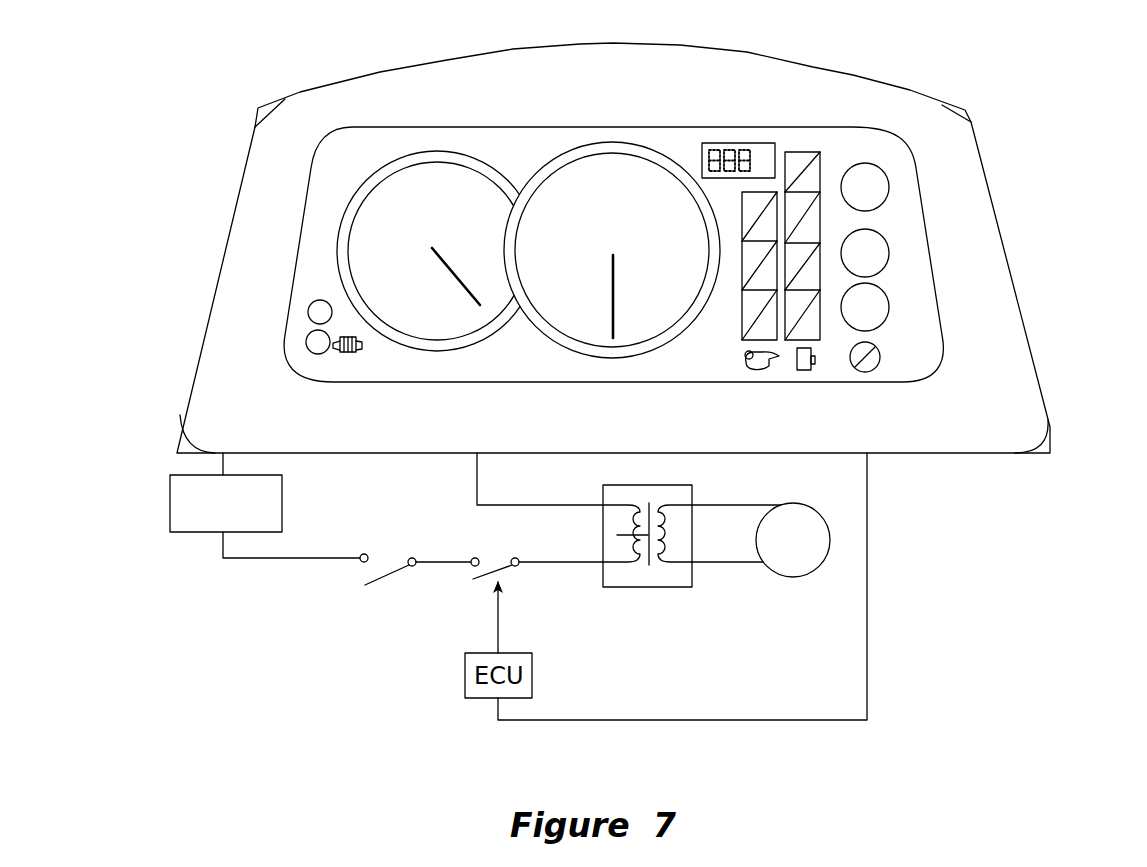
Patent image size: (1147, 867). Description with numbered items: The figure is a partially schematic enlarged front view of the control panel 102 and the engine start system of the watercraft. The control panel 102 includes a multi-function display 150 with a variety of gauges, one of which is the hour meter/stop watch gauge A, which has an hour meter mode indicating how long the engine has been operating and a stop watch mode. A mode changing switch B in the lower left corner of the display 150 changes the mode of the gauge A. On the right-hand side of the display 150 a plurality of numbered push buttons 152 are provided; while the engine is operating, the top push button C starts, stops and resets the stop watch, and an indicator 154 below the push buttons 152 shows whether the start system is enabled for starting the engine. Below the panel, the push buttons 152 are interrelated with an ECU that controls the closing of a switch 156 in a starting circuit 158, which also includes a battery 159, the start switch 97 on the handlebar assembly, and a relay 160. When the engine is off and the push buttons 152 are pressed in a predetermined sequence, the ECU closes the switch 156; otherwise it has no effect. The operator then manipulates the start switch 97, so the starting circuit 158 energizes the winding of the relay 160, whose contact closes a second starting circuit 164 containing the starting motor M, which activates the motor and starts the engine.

The control panel 102 is at (910, 90).
The multi-function display 150 is at (642, 125).
The hour meter/stop watch gauge A is at (741, 140).
The mode changing switch B is at (302, 323).
The top push button C is at (882, 162).
The push buttons 152 is at (893, 303).
The indicator 154 is at (883, 358).
The battery 159 is at (203, 547).
The start switch 97 is at (383, 590).
The switch 156 is at (475, 592).
The starting circuit 158 is at (555, 567).
The relay 160 is at (667, 598).
The second starting circuit 164 is at (735, 567).